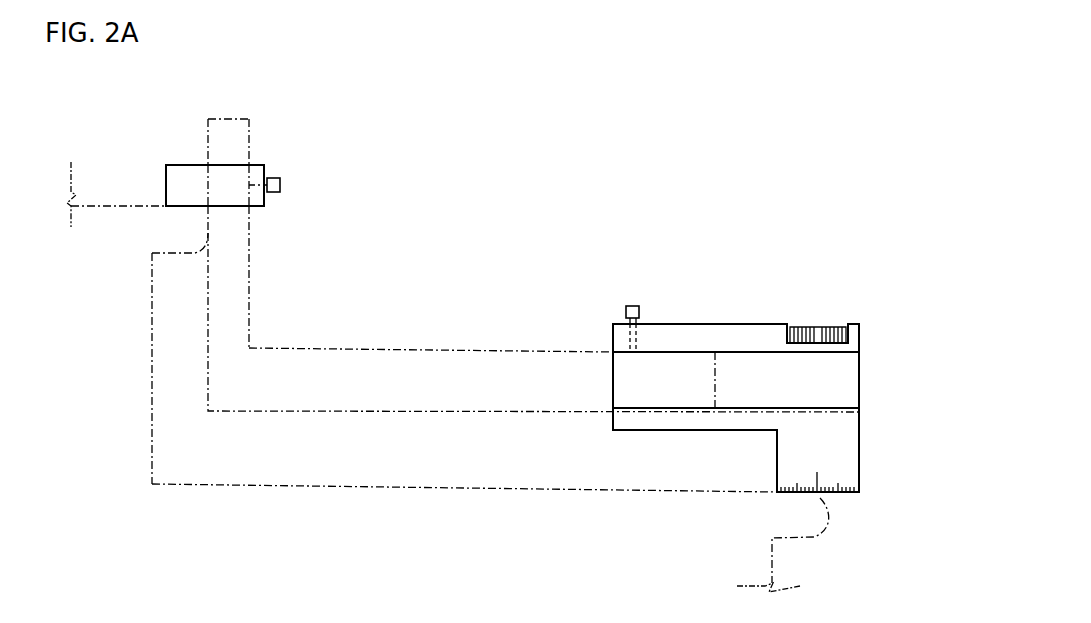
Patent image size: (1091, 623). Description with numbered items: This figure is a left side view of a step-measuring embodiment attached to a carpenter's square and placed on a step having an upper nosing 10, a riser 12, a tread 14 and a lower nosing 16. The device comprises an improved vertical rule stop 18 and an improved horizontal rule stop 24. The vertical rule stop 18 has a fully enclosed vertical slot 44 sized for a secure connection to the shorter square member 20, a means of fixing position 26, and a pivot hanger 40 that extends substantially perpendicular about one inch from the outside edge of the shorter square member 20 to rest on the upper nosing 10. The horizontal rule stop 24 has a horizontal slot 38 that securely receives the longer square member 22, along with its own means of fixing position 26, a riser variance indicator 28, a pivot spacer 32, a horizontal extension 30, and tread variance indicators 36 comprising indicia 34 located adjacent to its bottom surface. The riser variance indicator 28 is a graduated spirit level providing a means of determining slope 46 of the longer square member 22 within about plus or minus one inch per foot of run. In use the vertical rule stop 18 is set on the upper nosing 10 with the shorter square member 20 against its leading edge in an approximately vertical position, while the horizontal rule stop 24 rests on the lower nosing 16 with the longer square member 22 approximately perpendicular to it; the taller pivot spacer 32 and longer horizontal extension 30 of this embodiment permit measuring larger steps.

The upper nosing 10 is at (205, 212).
The riser 12 is at (151, 375).
The tread 14 is at (390, 488).
The lower nosing 16 is at (818, 497).
The vertical rule stop 18 is at (406, 116).
The shorter square member 20 is at (250, 295).
The longer square member 22 is at (416, 350).
The horizontal rule stop 24 is at (675, 194).
The means of fixing position 26 is at (280, 185).
The riser variance indicator 28 is at (827, 269).
The horizontal extension 30 is at (733, 372).
The pivot spacer 32 is at (859, 450).
The indicia 34 is at (817, 472).
The tread variance indicator 36 is at (835, 508).
The horizontal slot 38 is at (613, 380).
The pivot hanger 40 is at (166, 185).
The vertical slot 44 is at (227, 164).
The means of determining slope 46 is at (818, 327).